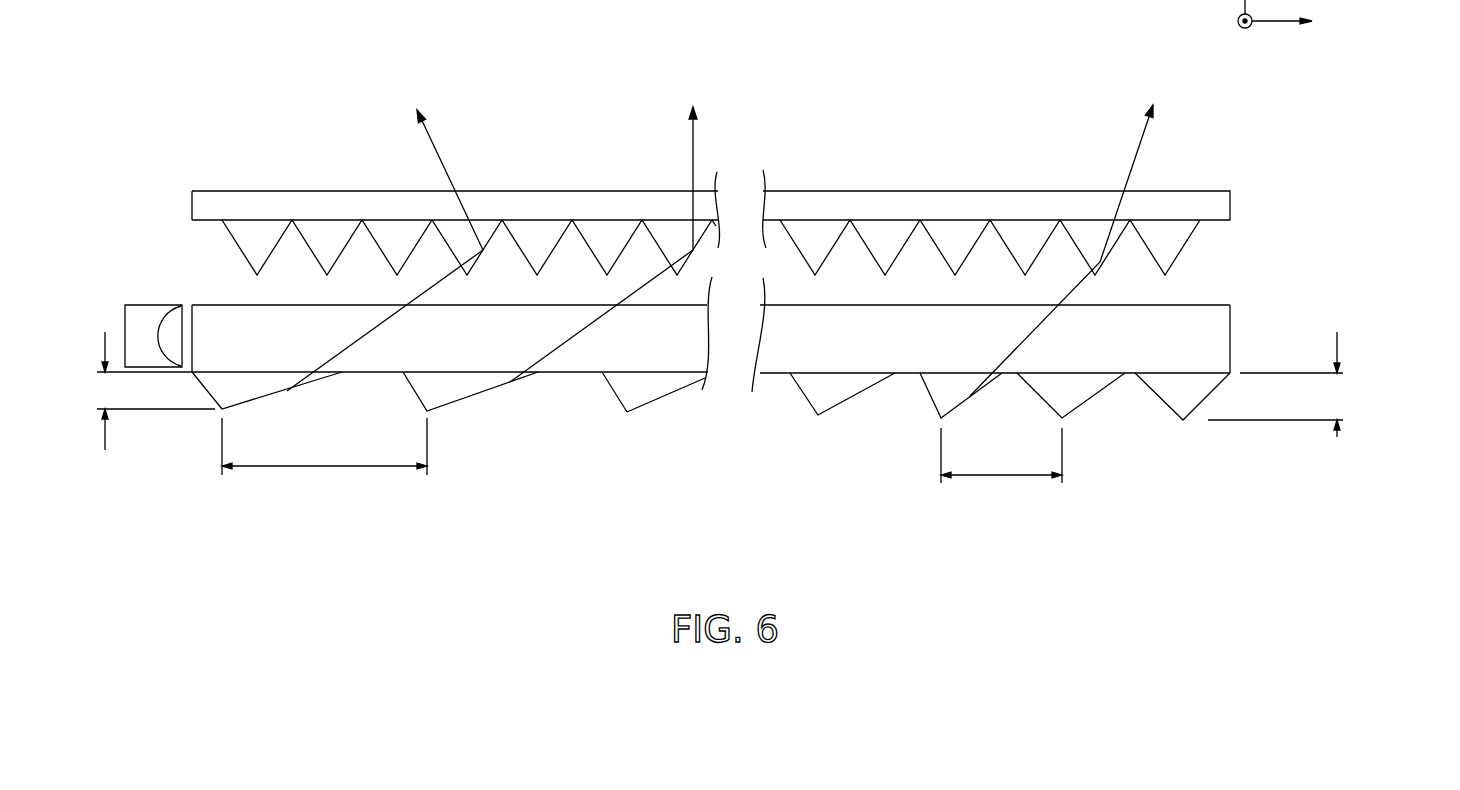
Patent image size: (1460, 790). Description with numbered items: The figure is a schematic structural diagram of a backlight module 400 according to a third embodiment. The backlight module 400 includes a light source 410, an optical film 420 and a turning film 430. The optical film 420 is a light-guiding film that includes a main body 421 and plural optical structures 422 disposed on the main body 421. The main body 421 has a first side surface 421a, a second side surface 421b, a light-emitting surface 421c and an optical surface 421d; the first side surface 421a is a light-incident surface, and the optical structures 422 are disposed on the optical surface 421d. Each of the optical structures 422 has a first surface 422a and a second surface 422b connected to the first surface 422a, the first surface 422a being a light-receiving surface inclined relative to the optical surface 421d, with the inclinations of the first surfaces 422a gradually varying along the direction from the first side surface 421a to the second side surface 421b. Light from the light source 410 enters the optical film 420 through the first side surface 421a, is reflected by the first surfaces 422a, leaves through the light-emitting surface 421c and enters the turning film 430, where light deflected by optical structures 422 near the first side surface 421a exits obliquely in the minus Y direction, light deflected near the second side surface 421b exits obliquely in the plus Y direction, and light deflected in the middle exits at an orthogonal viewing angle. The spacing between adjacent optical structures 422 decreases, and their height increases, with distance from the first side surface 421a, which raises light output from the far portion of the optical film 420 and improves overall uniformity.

The backlight module 400 is at (105, 77).
The light source 410 is at (138, 315).
The optical film 420 is at (789, 323).
The main body 421 is at (789, 318).
The first side surface 421a is at (187, 313).
The second side surface 421b is at (1230, 337).
The light-emitting surface 421c is at (852, 303).
The optical surface 421d is at (782, 373).
The optical structures 422 is at (711, 439).
The first surface 422a is at (657, 400).
The second surface 422b is at (613, 397).
The turning film 430 is at (1243, 193).